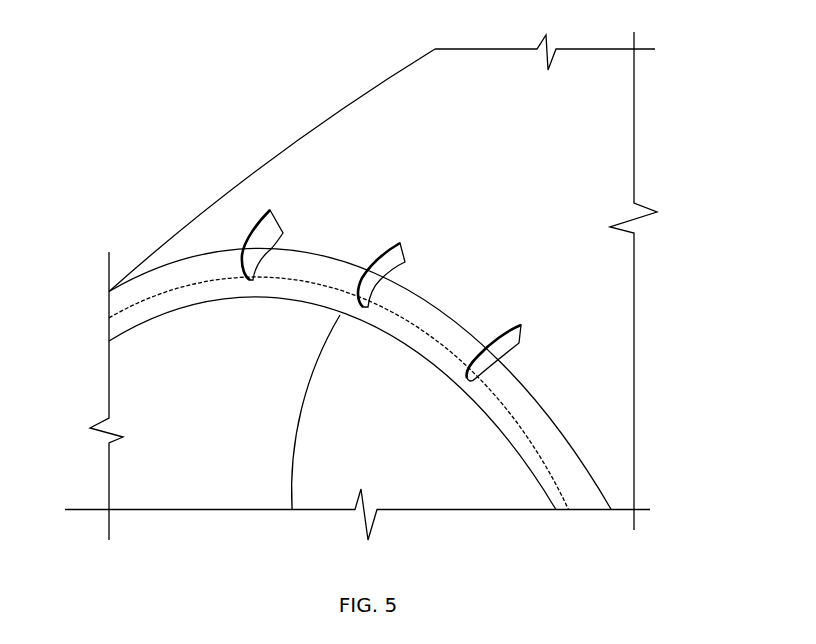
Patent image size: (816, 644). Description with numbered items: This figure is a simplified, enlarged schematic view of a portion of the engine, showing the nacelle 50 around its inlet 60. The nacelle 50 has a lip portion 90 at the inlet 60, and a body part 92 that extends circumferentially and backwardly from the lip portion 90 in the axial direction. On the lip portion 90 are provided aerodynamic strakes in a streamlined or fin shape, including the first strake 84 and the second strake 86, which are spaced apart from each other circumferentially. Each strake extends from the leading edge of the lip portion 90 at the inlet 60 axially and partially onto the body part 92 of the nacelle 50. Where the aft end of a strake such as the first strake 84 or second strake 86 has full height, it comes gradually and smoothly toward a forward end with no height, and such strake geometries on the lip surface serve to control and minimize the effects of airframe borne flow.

The nacelle 50 is at (577, 128).
The inlet 60 is at (182, 383).
The first strake 84 is at (263, 225).
The second strake 86 is at (388, 258).
The lip portion 90 is at (163, 277).
The body part 92 is at (507, 198).